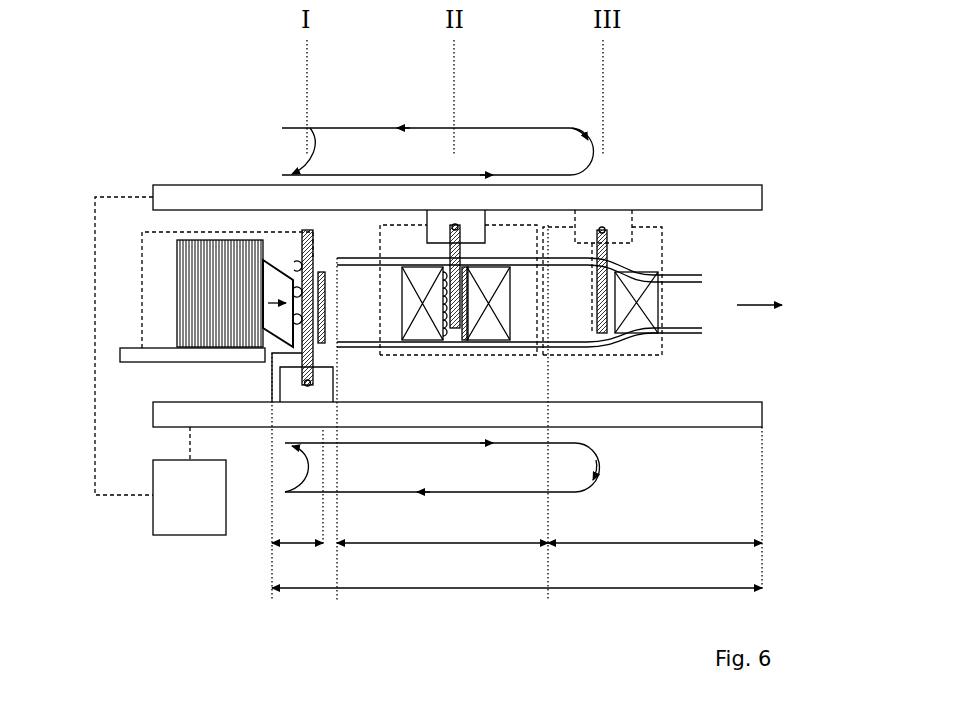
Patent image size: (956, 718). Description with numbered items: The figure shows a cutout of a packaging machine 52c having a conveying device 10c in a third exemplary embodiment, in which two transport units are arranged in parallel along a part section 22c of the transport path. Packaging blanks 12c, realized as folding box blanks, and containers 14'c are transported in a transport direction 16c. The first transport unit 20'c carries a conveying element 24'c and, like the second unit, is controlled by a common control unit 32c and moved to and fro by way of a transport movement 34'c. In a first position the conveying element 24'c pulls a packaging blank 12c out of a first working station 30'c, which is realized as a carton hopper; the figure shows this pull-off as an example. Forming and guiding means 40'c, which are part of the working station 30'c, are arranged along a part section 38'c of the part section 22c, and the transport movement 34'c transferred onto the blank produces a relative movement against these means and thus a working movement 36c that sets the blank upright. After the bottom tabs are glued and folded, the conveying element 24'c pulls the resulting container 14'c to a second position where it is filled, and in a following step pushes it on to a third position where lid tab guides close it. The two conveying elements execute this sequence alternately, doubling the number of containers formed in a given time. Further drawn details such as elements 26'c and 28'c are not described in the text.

The conveying device 10c is at (678, 108).
The packaging machine 52c is at (709, 61).
The transport unit 20'c is at (457, 450).
The control unit 32c is at (185, 525).
The first working station 30'c is at (214, 226).
The working movement 36c is at (262, 243).
The packaging blank 12c is at (278, 258).
The coupling element 26'c is at (160, 305).
The forming and guiding means 40'c is at (290, 208).
The spring element 28'c is at (328, 272).
The conveying element 24'c is at (344, 316).
The container 14'c is at (458, 303).
The transport direction 16c is at (765, 303).
The transport movement 34'c is at (442, 542).
The part section 38'c is at (266, 482).
The part section 22c is at (517, 614).